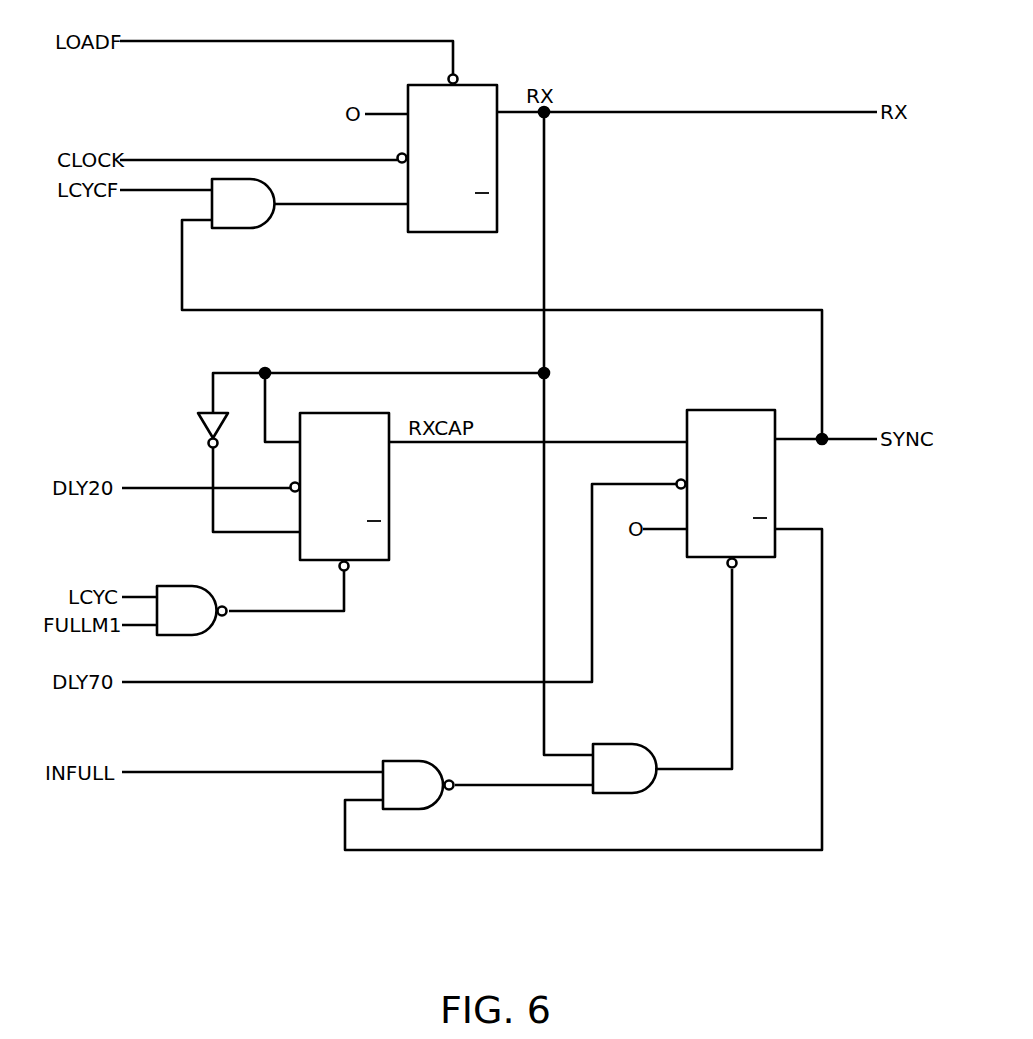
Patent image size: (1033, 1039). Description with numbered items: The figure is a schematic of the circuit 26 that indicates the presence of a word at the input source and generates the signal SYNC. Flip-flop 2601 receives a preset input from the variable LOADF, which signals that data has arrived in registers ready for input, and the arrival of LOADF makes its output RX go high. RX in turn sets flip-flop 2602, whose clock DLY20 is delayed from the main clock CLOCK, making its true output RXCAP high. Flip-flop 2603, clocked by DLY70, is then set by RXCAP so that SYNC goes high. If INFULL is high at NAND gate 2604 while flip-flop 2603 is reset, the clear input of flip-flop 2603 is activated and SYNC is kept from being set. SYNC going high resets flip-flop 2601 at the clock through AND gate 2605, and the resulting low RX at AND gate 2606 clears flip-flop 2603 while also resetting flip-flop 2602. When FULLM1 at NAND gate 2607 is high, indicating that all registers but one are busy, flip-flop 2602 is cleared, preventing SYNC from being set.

The circuit 26 is at (220, 853).
The RX flip-flop 2601 is at (494, 82).
The RXCAP flip-flop 2602 is at (389, 508).
The SYNC flip-flop 2603 is at (730, 410).
The NAND gate 2604 is at (413, 761).
The AND gate 2605 is at (250, 228).
The AND gate 2606 is at (628, 744).
The NAND gate 2607 is at (212, 625).